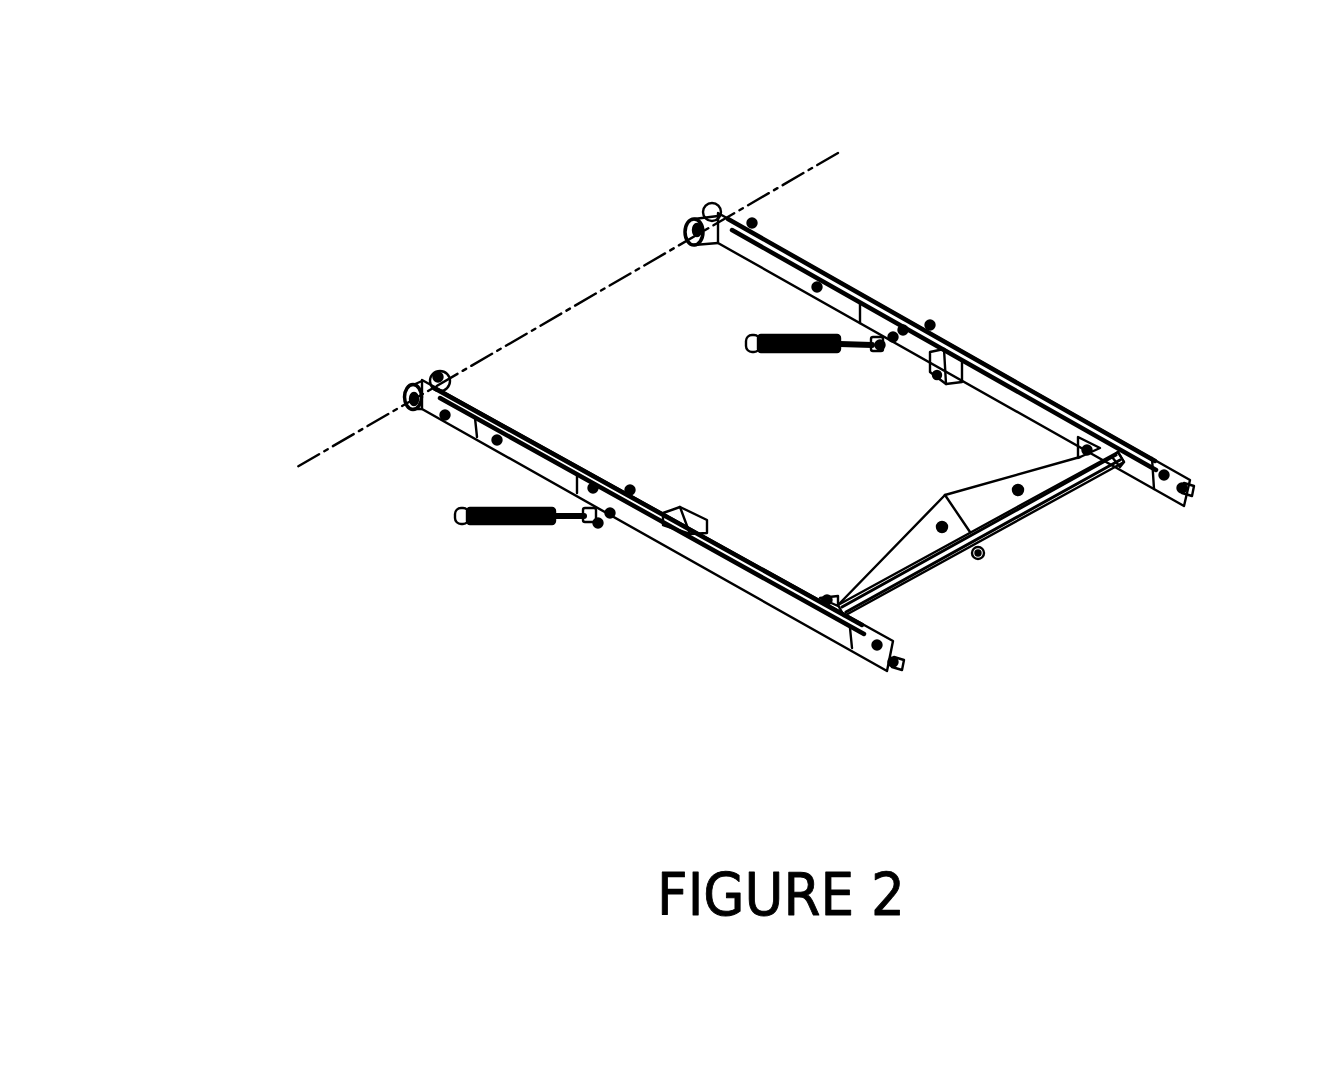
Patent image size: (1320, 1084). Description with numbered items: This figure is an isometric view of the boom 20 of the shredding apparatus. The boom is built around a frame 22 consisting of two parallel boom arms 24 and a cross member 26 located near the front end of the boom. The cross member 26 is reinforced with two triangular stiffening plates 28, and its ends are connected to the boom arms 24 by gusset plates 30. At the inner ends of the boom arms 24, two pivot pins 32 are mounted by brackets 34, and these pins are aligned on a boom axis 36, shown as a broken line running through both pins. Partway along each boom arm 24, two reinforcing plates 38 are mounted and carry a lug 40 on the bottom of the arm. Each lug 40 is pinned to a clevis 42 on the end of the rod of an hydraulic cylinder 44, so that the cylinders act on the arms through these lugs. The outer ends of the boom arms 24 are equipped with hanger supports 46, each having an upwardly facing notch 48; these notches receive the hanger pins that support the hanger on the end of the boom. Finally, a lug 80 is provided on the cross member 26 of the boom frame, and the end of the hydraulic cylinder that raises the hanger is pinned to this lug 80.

The frame assembly 20 is at (386, 699).
The frame 22 is at (1068, 397).
The boom arms 24 is at (835, 280).
The cross member 26 is at (1027, 503).
The triangular stiffening plates 28 is at (1014, 489).
The gusset plates 30 is at (1098, 440).
The pivot pins 32 is at (693, 225).
The brackets 34 is at (755, 222).
The boom axis 36 is at (783, 185).
The reinforcing plates 38 is at (930, 323).
The lug 40 is at (786, 474).
The clevis 42 is at (712, 483).
The hydraulic cylinder 44 is at (515, 508).
The hanger supports 46 is at (1170, 476).
The notch 48 is at (1193, 493).
The lug 80 is at (984, 558).